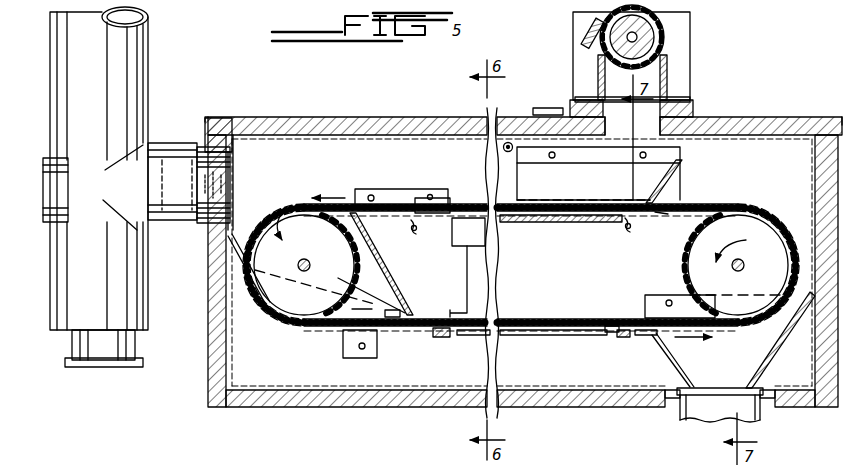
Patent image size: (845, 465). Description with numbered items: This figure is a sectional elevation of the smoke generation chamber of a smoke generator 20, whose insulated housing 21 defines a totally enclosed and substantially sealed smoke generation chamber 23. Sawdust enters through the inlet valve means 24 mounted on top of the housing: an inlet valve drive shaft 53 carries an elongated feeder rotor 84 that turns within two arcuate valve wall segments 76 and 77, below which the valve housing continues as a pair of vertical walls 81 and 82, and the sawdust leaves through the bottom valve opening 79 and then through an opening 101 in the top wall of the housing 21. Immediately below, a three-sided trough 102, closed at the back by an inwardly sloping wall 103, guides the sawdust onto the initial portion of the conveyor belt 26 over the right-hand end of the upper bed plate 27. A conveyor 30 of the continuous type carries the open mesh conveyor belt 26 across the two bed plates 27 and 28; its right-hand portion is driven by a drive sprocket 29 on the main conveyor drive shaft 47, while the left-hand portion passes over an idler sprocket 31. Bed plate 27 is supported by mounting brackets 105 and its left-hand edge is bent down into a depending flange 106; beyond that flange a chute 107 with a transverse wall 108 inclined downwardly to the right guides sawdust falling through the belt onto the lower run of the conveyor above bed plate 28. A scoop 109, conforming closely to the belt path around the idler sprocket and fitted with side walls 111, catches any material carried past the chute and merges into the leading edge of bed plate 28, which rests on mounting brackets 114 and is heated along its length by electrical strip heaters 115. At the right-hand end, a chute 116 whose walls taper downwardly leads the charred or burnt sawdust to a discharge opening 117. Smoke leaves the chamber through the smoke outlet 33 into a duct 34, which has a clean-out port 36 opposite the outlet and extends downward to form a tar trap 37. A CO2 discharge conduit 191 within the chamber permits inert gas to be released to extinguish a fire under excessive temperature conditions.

The smoke generator 20 is at (392, 102).
The housing 21 is at (762, 118).
The smoke generation chamber 23 is at (340, 178).
The inlet valve means 24 is at (568, 40).
The conveyor belt 26 is at (692, 210).
The bed plate 27 is at (431, 221).
The bed plate 28 is at (412, 327).
The drive sprocket 29 is at (684, 264).
The conveyor 30 is at (283, 230).
The idler sprocket 31 is at (356, 300).
The smoke outlet 33 is at (202, 227).
The duct 34 is at (133, 72).
The clean-out port 36 is at (43, 180).
The tar trap 37 is at (93, 353).
The main conveyor drive shaft 47 is at (745, 268).
The inlet valve drive shaft 53 is at (648, 50).
The arcuate valve wall segment 76 is at (662, 32).
The arcuate valve wall segment 77 is at (598, 64).
The valve opening 79 is at (632, 92).
The vertical wall 81 is at (668, 87).
The vertical wall 82 is at (596, 88).
The feeder rotor 84 is at (655, 39).
The opening 101 is at (652, 130).
The trough 102 is at (580, 186).
The inwardly sloping wall 103 is at (678, 172).
The mounting bracket 105 is at (556, 224).
The depending flange 106 is at (418, 236).
The chute 107 is at (394, 194).
The transverse wall 108 is at (368, 228).
The scoop 109 is at (272, 327).
The side wall 111 is at (353, 310).
The mounting bracket 114 is at (371, 348).
The electrical strip heater 115 is at (472, 337).
The chute 116 is at (760, 356).
The discharge opening 117 is at (713, 402).
The CO2 discharge conduit 191 is at (503, 150).